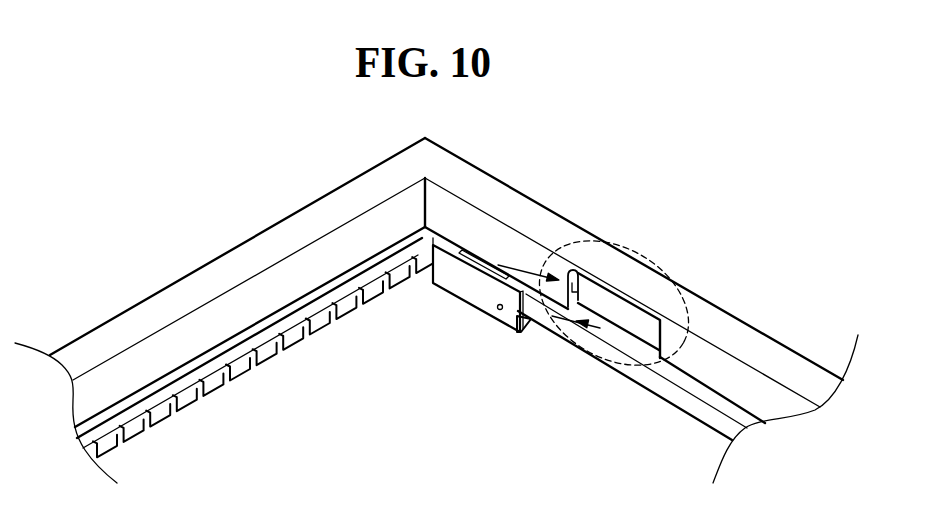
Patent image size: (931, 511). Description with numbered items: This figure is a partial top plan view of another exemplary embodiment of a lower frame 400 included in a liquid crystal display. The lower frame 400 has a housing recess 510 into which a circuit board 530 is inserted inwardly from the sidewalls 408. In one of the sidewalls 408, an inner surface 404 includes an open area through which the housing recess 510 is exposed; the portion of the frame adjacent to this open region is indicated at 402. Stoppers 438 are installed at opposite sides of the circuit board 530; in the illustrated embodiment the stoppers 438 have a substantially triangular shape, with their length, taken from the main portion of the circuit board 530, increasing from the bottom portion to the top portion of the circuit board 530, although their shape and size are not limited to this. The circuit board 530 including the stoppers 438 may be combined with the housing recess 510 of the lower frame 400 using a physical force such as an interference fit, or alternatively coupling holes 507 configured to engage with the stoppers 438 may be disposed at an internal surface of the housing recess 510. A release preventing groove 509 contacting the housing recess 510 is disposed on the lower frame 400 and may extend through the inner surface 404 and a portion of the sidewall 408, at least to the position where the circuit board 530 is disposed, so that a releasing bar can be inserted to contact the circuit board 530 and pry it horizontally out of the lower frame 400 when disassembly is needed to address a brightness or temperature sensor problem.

The lower frame 400 is at (758, 308).
The top surface of frame 402 is at (518, 205).
The inner surface 404 is at (440, 222).
The sidewalls 408 is at (347, 187).
The stoppers 438 is at (515, 335).
The coupling holes 507 is at (575, 307).
The release preventing groove 509 is at (662, 321).
The housing recess 510 is at (650, 252).
The circuit board 530 is at (472, 287).